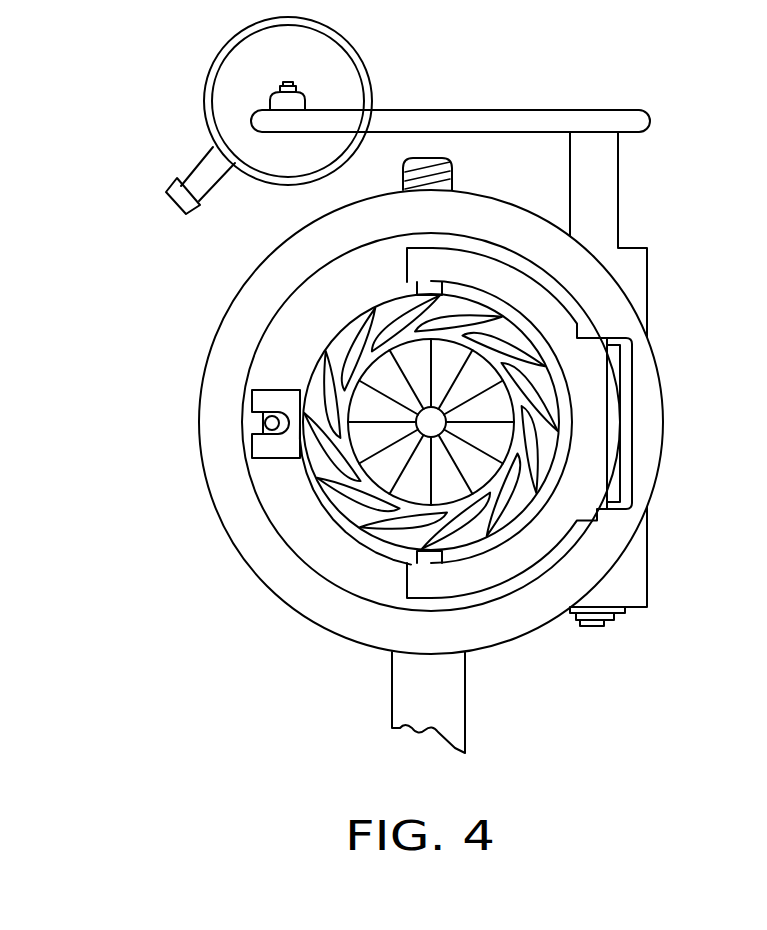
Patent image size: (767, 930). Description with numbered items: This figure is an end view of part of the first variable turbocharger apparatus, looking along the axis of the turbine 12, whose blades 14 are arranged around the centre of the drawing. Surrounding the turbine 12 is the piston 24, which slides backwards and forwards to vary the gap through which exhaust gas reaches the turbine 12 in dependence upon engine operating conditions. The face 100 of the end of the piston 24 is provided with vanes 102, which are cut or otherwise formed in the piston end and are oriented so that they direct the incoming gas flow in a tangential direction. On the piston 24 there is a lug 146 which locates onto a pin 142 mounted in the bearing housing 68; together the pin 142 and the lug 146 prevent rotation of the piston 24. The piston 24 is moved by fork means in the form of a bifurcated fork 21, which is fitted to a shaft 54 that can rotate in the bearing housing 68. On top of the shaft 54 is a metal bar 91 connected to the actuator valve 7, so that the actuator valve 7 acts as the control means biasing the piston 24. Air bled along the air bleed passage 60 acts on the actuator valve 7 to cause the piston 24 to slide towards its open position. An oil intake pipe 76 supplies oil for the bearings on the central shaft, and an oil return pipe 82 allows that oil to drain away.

The actuator valve 7 is at (250, 113).
The metal bar 91 is at (620, 122).
The air bleed passage 60 is at (190, 200).
The oil intake pipe 76 is at (447, 172).
The shaft 54 is at (597, 202).
The bearing housing 68 is at (365, 628).
The oil return pipe 82 is at (432, 707).
The bifurcated fork 21 is at (580, 483).
The piston 24 is at (303, 475).
The lug 146 is at (290, 390).
The pin 142 is at (260, 423).
The turbine 12 is at (415, 487).
The turbine blades 14 is at (505, 377).
The face of the piston end 100 is at (332, 362).
The vanes 102 is at (413, 550).